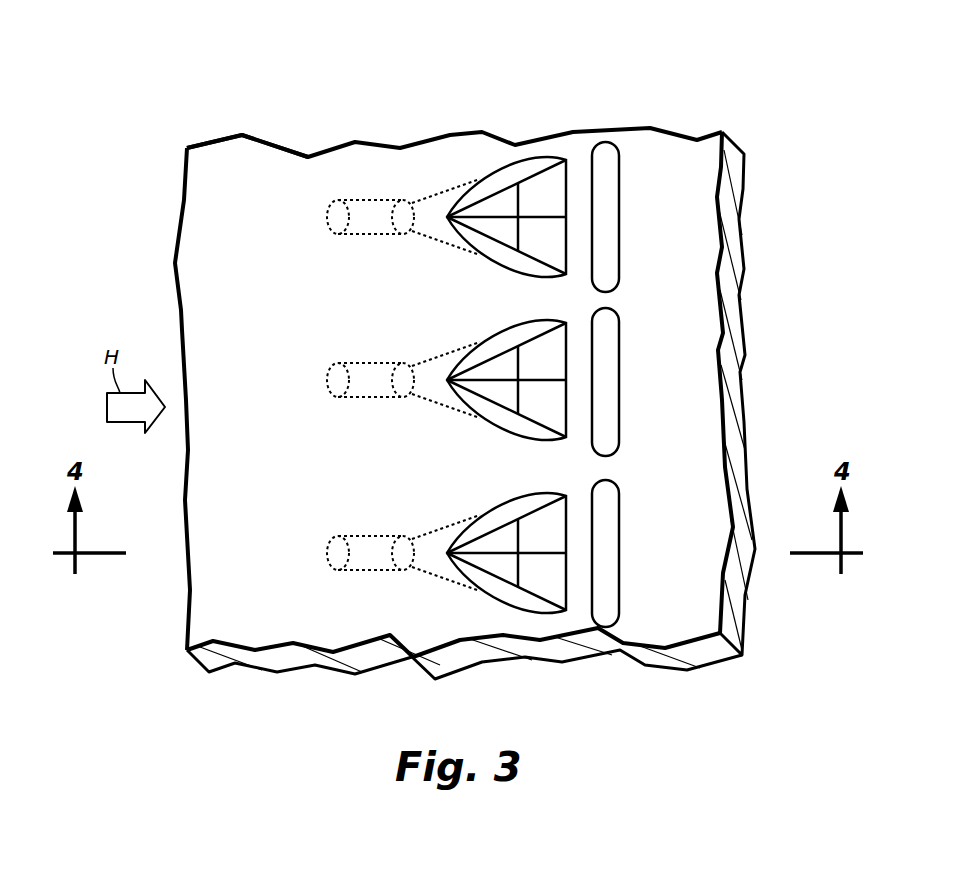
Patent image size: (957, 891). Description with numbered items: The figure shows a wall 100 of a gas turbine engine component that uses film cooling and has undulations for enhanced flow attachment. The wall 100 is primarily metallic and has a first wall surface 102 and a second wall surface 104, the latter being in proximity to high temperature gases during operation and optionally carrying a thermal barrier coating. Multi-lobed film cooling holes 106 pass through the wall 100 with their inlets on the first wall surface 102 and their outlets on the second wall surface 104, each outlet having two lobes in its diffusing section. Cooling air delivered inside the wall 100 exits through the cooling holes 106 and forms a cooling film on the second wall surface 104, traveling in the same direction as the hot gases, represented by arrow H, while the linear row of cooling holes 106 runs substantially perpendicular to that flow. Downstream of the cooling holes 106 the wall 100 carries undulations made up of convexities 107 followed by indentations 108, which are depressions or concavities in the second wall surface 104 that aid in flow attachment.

The wall 100 is at (148, 193).
The first wall surface 102 is at (745, 290).
The second wall surface 104 is at (238, 181).
The multi-lobed film cooling holes 106 is at (312, 227).
The convexities 107 is at (580, 150).
The indentations 108 is at (620, 213).